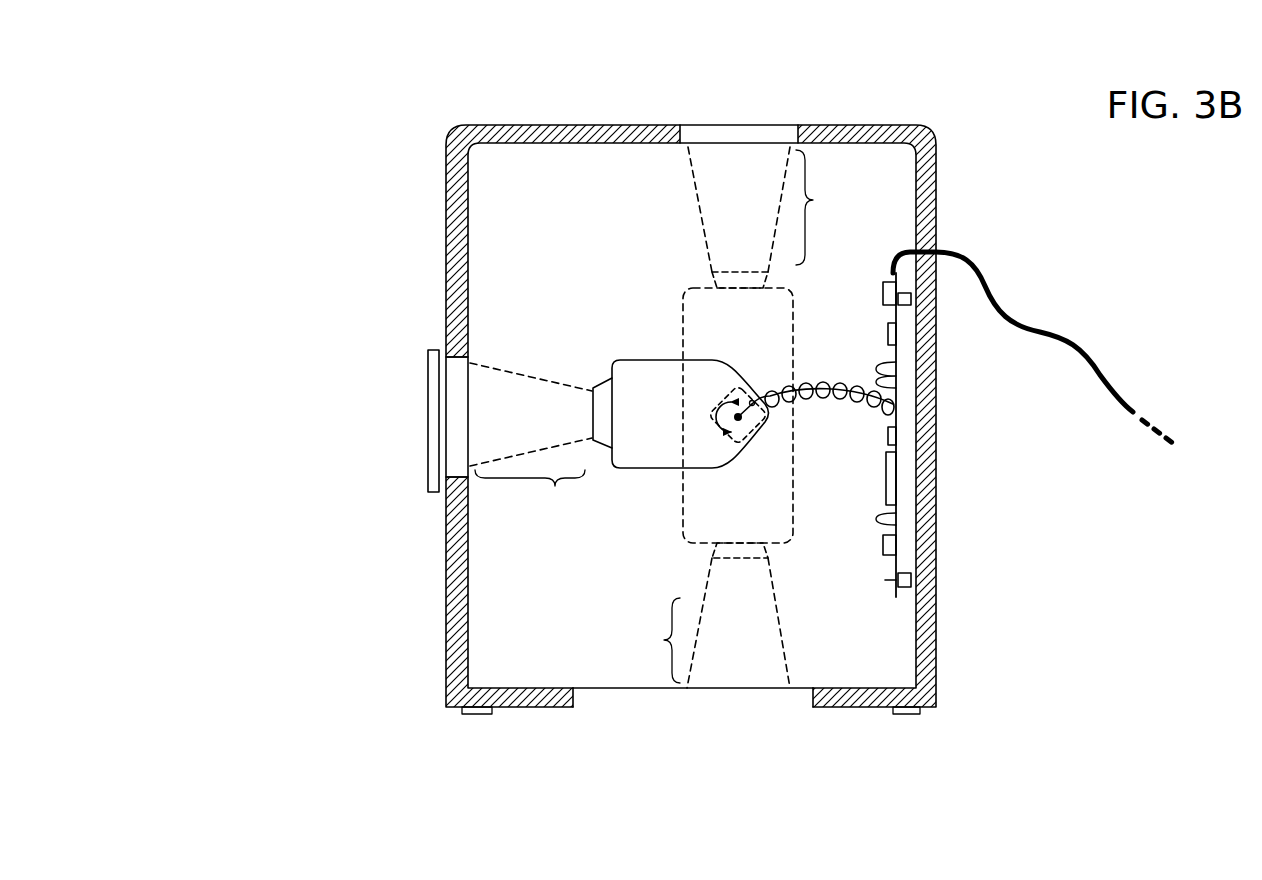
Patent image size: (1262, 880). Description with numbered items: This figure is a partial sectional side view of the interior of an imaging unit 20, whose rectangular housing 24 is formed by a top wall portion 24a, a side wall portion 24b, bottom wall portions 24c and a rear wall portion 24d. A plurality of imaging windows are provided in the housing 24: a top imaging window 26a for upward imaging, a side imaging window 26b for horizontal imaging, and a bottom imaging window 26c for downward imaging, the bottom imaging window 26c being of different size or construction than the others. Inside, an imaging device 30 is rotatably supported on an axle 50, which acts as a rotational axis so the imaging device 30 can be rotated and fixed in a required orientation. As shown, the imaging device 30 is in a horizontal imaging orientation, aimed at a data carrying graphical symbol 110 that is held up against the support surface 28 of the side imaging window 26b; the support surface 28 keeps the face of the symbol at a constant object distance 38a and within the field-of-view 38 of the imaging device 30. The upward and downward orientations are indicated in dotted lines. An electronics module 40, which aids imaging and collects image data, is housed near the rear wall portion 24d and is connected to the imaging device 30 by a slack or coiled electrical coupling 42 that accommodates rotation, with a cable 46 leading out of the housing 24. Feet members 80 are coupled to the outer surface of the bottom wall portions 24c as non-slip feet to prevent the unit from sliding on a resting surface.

The imaging unit 20 is at (300, 724).
The housing 24 is at (441, 138).
The top wall portion 24a is at (545, 144).
The side wall portion 24b is at (447, 220).
The bottom wall portion 24c is at (513, 690).
The rear wall portion 24d is at (936, 443).
The top imaging window 26a is at (706, 117).
The side imaging window 26b is at (488, 360).
The bottom imaging window 26c is at (690, 721).
The support surface 28 is at (442, 328).
The imaging device 30 is at (663, 462).
The field-of-view 38 is at (715, 222).
The imaging distance 38a is at (815, 200).
The electronics module 40 is at (880, 502).
The electrical coupling 42 is at (808, 380).
The cable 46 is at (1032, 330).
The axle 50 is at (757, 436).
The feet members 80 is at (476, 718).
The data carrying graphical symbol 110 is at (428, 420).